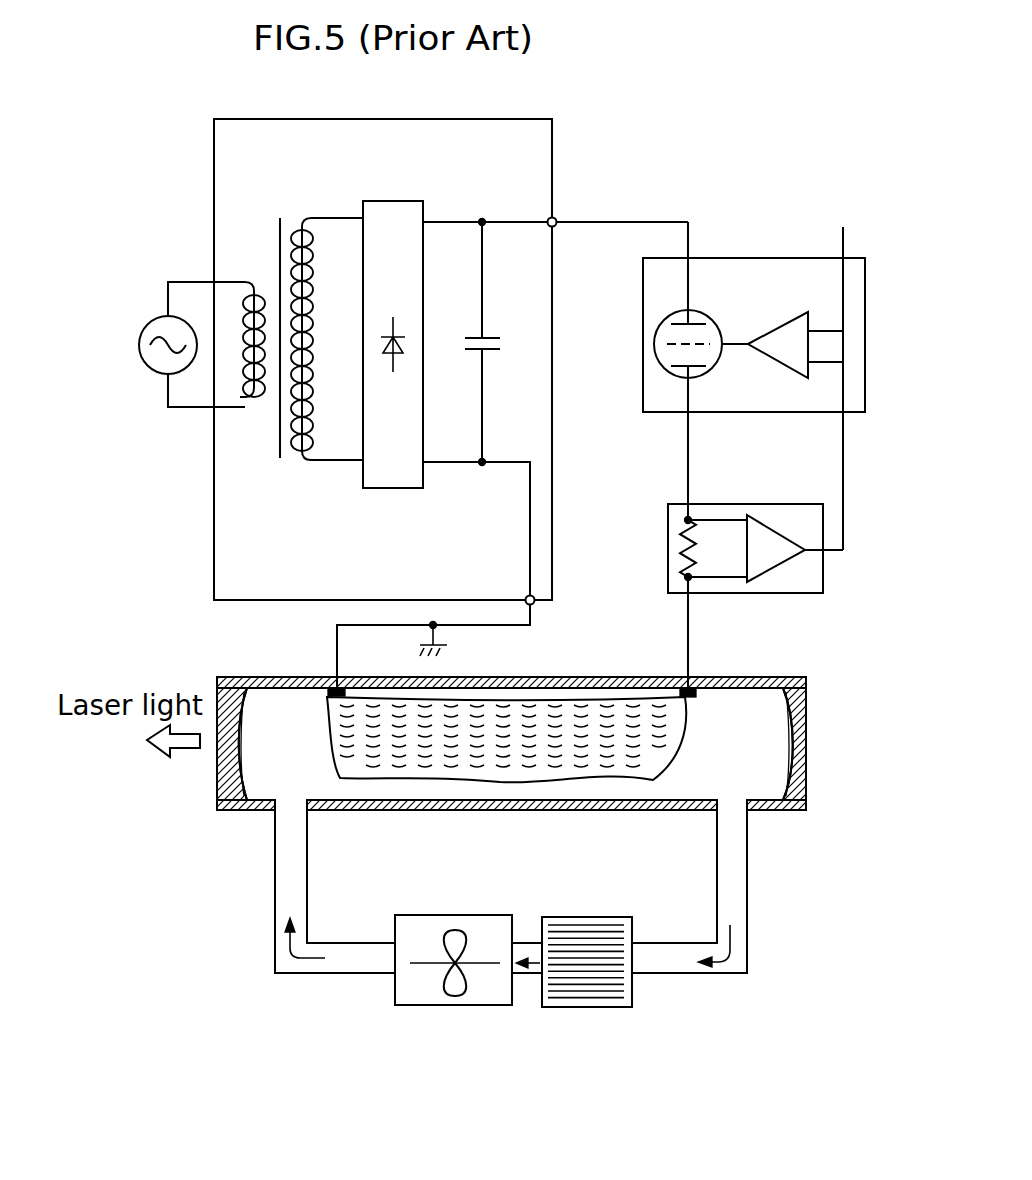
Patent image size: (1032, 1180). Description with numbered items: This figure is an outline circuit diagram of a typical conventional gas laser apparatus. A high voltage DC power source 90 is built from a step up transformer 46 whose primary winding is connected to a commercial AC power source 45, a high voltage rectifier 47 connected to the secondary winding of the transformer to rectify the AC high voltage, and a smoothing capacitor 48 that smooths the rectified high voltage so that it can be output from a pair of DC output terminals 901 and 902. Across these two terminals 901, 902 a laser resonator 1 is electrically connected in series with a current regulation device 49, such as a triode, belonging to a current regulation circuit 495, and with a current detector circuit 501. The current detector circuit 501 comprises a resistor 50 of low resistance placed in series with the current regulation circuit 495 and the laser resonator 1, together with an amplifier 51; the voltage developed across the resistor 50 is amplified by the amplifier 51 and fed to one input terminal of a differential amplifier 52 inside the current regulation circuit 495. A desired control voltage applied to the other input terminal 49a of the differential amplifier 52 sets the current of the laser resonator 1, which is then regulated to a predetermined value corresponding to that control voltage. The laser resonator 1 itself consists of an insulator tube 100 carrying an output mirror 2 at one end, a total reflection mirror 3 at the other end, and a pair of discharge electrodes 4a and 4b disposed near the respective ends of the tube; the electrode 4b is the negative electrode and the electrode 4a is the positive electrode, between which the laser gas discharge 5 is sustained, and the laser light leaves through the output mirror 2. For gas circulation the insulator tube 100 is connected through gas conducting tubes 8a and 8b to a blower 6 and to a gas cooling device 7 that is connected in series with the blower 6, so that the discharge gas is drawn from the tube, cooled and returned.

The laser resonator 1 is at (540, 678).
The output mirror 2 is at (246, 700).
The total reflection mirror 3 is at (783, 700).
The discharge electrode 4a is at (690, 685).
The discharge electrode 4b is at (330, 685).
The laser gas discharge region 5 is at (482, 770).
The blower 6 is at (455, 1005).
The gas cooling device 7 is at (590, 1007).
The gas conducting tube 8a is at (275, 955).
The gas conducting tube 8b is at (748, 955).
The insulator tube 100 is at (578, 812).
The commercial AC power source 45 is at (156, 318).
The transformer 46 is at (281, 212).
The high voltage rectifier 47 is at (400, 200).
The smoothing capacitor 48 is at (495, 336).
The current regulation device 49 is at (654, 345).
The input terminal 49a is at (848, 250).
The current regulation circuit 495 is at (716, 270).
The resistor 50 is at (682, 548).
The current detector circuit 501 is at (718, 515).
The amplifier 51 is at (790, 565).
The differential amplifier 52 is at (792, 322).
The high voltage DC power source 90 is at (535, 182).
The DC output terminal 901 is at (557, 226).
The DC output terminal 902 is at (535, 604).